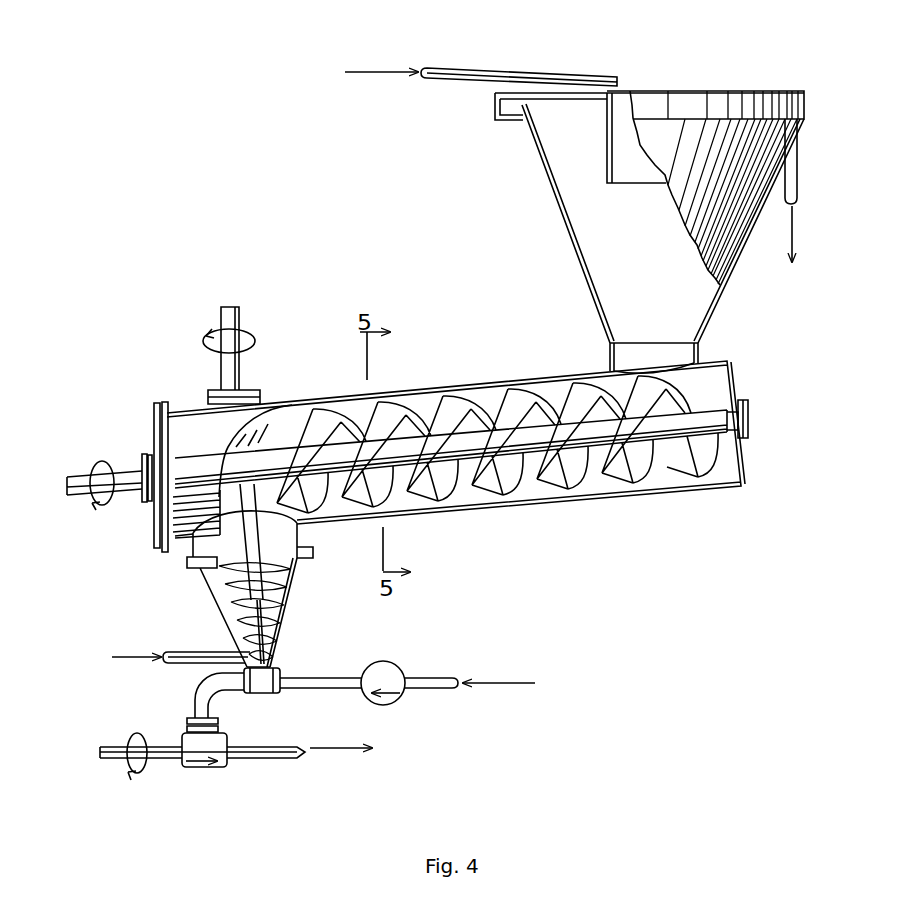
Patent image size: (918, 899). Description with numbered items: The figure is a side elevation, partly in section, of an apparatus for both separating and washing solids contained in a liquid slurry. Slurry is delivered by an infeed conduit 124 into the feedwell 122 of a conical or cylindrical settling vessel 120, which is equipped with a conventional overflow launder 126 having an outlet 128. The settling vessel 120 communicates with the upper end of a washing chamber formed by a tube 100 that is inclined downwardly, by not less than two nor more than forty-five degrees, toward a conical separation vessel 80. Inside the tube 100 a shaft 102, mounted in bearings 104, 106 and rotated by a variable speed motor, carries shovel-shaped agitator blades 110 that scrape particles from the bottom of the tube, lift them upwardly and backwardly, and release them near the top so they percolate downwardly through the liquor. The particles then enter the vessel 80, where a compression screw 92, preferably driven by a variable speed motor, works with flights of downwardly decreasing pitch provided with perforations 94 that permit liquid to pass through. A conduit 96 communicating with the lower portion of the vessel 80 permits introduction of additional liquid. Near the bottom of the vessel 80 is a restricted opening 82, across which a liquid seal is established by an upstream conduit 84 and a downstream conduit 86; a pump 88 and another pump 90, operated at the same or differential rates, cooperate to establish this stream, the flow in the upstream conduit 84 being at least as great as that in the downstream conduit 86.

The conical separation vessel 80 is at (292, 602).
The restricted opening 82 is at (272, 670).
The upstream conduit 84 is at (300, 673).
The downstream conduit 86 is at (202, 693).
The pump 88 is at (399, 667).
The pump 90 is at (208, 764).
The compression screw 92 is at (240, 372).
The perforations 94 is at (246, 589).
The conduit 96 is at (200, 650).
The tube 100 is at (297, 400).
The shaft 102 is at (128, 470).
The bearing 104 is at (146, 493).
The bearing 106 is at (748, 434).
The shovel-shaped agitator blades 110 is at (395, 412).
The settling vessel 120 is at (722, 282).
The feedwell 122 is at (607, 163).
The infeed conduit 124 is at (580, 72).
The overflow launder 126 is at (515, 112).
The outlet 128 is at (810, 187).